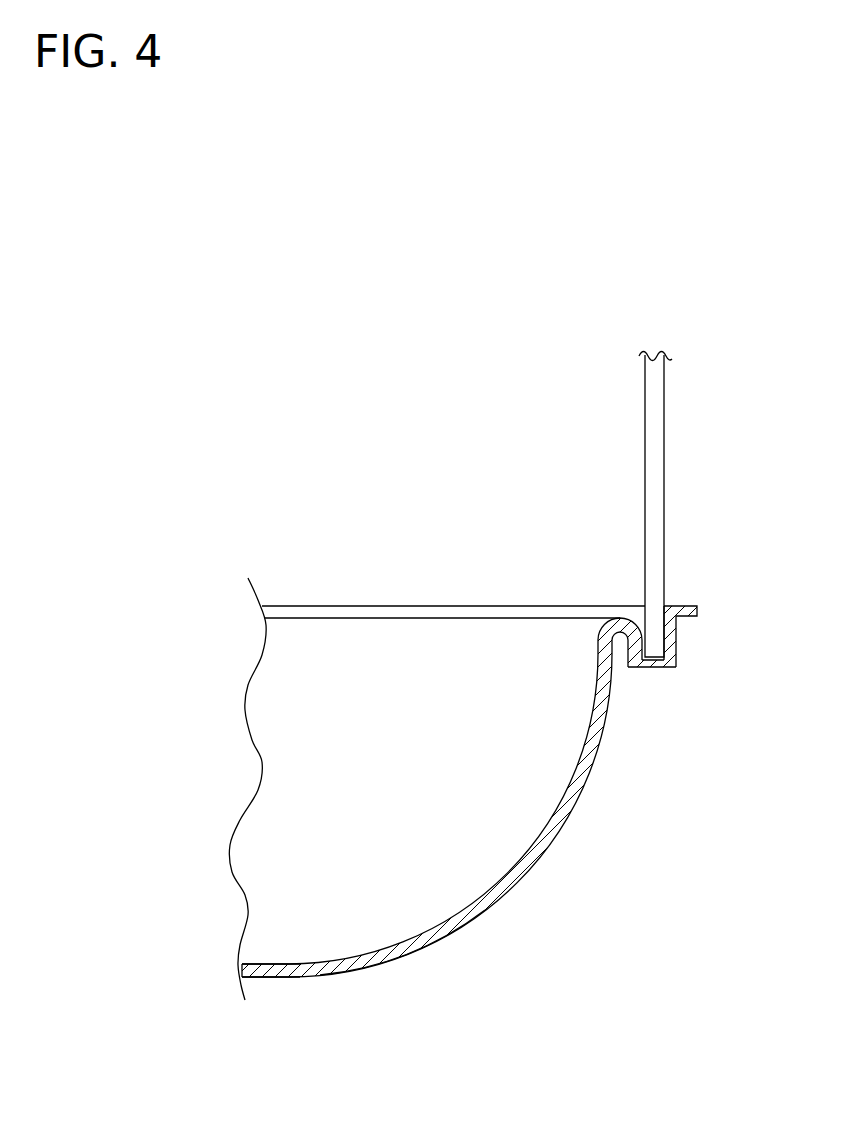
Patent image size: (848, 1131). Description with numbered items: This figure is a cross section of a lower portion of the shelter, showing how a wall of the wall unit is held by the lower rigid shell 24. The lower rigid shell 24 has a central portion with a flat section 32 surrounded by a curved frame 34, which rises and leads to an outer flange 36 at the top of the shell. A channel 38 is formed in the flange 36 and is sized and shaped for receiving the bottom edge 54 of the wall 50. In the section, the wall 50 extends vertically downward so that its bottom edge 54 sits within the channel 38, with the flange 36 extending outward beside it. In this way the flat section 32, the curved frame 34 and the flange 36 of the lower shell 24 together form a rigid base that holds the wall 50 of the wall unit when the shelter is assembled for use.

The wall 50 is at (665, 456).
The outer flange 36 is at (694, 605).
The channel 38 is at (677, 628).
The bottom edge 54 is at (655, 668).
The lower rigid shell 24 is at (597, 797).
The curved frame 34 is at (440, 943).
The flat section 32 is at (297, 978).